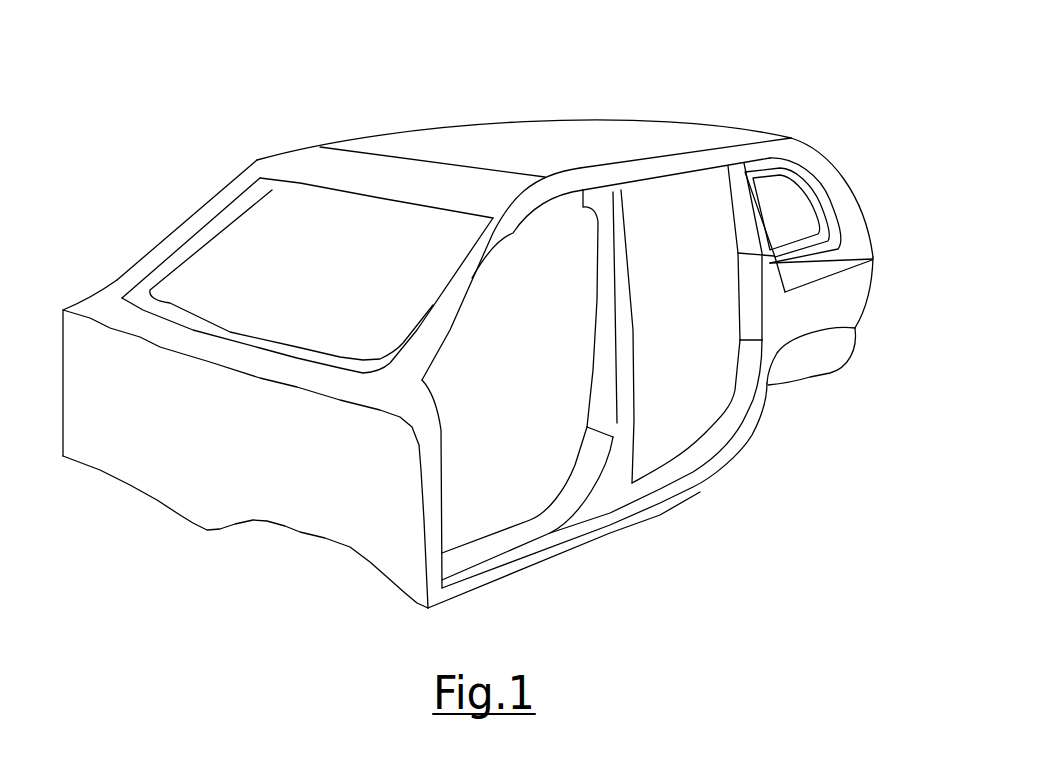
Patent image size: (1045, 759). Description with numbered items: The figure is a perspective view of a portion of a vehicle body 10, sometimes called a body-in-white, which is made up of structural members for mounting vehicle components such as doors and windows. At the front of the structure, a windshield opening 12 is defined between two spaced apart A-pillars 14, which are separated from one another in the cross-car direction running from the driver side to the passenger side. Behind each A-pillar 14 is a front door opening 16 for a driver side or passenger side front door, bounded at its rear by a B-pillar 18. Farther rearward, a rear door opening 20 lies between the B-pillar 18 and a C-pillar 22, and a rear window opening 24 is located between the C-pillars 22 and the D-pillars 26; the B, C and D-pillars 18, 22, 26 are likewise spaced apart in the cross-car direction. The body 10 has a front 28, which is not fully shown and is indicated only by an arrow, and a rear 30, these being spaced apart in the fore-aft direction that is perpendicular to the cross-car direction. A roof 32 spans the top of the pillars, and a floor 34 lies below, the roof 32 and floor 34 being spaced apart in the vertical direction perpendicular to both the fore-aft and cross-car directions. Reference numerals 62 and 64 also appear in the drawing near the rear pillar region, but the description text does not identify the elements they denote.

The vehicle body 10 is at (252, 93).
The windshield opening 12 is at (217, 263).
The A-pillars 14 is at (240, 203).
The front door openings 16 is at (480, 475).
The B-pillars 18 is at (628, 327).
The rear door openings 20 is at (673, 438).
The C-pillars 22 is at (747, 226).
The rear window opening 24 is at (780, 197).
The D-pillars 26 is at (830, 190).
The front 28 is at (125, 568).
The rear 30 is at (879, 273).
The roof 32 is at (579, 133).
The floor 34 is at (531, 577).
The inner panel 62 is at (810, 218).
The outer panel 64 is at (852, 213).